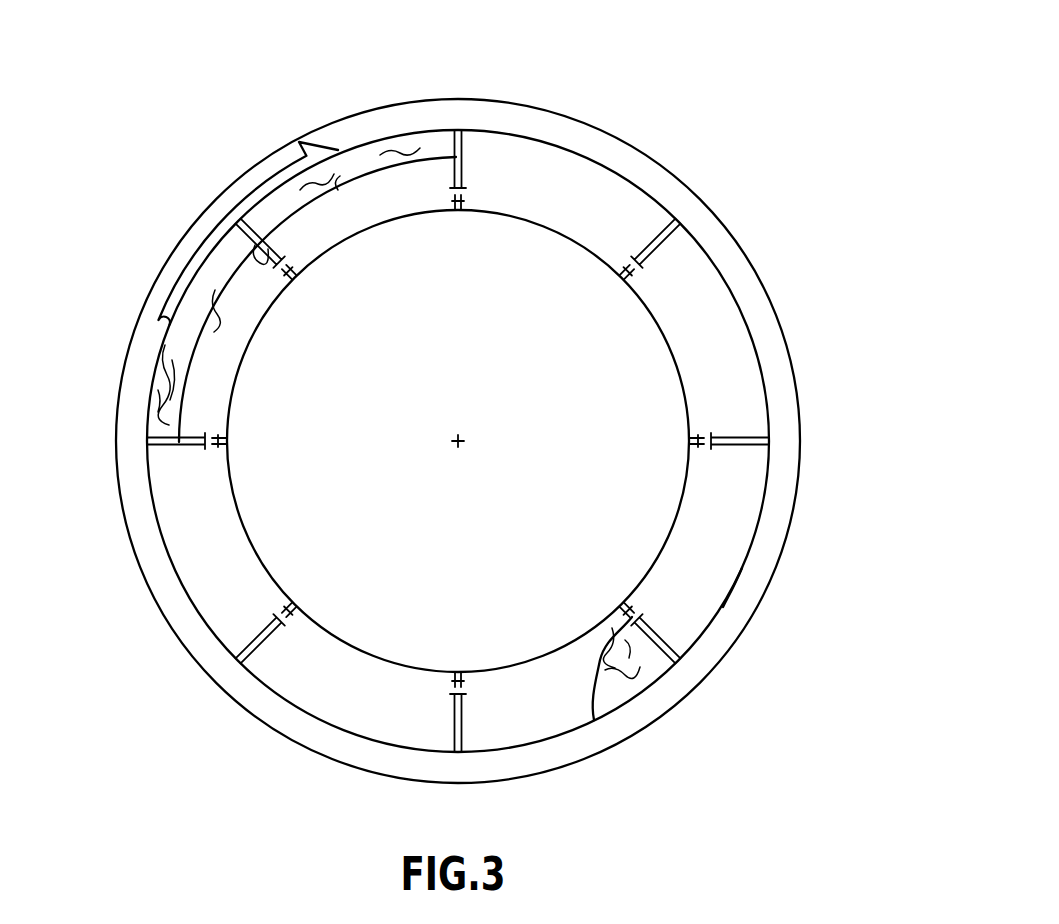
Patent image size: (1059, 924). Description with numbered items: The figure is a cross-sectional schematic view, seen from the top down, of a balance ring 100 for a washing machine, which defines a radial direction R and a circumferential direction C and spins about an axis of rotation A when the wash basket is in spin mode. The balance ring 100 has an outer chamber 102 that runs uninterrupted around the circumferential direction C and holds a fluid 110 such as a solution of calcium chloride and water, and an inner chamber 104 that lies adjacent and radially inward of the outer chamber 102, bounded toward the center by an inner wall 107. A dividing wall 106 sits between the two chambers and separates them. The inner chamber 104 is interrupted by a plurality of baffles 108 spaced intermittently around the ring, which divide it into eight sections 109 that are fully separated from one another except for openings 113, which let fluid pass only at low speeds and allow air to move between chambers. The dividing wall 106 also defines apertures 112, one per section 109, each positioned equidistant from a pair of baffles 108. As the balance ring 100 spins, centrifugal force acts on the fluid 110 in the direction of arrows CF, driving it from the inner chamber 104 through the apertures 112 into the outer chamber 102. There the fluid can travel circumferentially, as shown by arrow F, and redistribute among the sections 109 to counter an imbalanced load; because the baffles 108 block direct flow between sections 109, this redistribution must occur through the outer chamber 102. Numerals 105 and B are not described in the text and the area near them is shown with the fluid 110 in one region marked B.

The balance ring 100 is at (653, 110).
The outer chamber 102 is at (717, 243).
The inner chamber 104 is at (715, 363).
The casing outer surface 105 is at (110, 450).
The dividing wall 106 is at (507, 133).
The inner wall 107 is at (278, 578).
The baffles 108 is at (655, 240).
The sections 109 is at (513, 177).
The fluid 110 is at (172, 348).
The apertures or openings 112 is at (745, 320).
The openings 113 is at (633, 278).
The arrow F is at (207, 233).
The circumferential direction C is at (218, 165).
The axis of rotation A is at (461, 418).
The radial direction R is at (572, 441).
The flame region B is at (595, 684).
The arrows CF is at (200, 402).